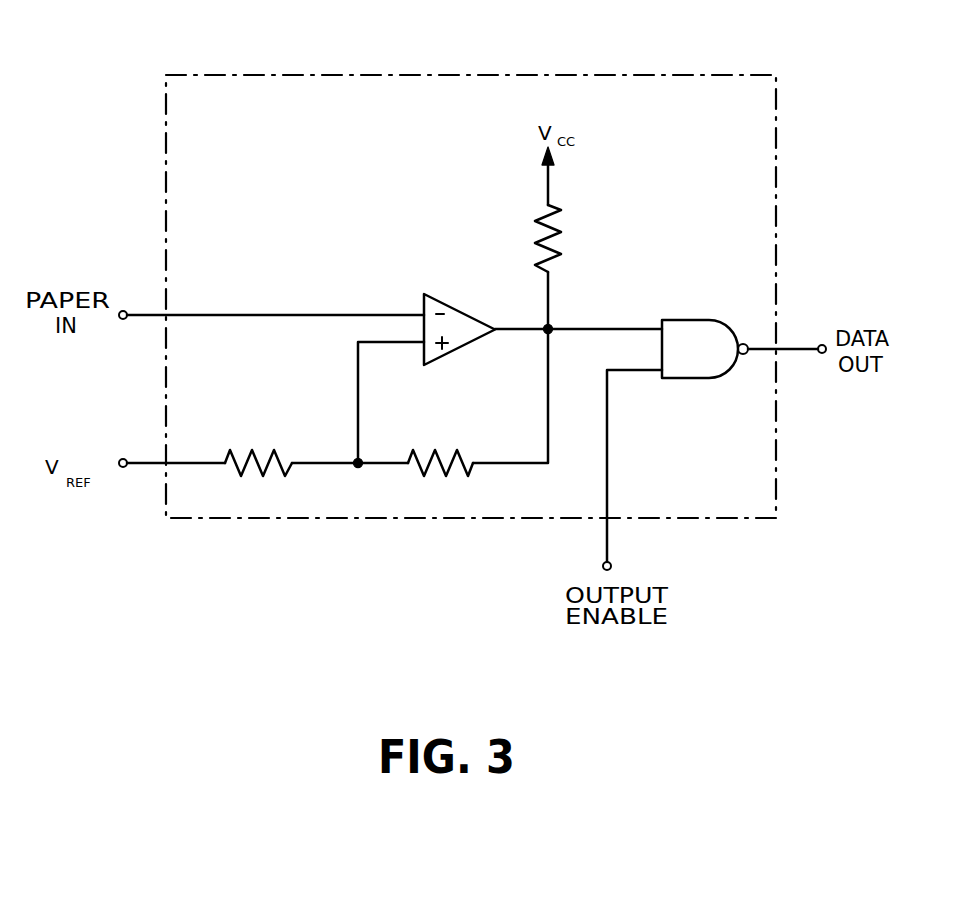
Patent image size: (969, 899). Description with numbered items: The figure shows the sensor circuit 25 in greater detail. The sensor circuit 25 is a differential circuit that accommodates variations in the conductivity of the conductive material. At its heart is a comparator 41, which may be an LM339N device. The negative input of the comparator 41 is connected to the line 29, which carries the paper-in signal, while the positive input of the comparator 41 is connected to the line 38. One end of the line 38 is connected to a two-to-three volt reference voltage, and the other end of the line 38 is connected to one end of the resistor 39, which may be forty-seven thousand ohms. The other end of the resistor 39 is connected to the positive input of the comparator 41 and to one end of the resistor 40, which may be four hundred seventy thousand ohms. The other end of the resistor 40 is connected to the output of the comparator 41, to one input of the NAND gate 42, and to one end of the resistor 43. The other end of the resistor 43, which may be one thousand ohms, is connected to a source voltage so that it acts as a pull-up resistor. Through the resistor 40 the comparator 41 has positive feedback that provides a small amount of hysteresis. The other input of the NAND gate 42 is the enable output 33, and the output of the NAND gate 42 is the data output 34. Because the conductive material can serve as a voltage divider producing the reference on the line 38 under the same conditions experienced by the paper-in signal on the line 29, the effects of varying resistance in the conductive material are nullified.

The sensor circuit 25 is at (332, 74).
The line 29 is at (200, 315).
The enable output 33 is at (607, 430).
The data output 34 is at (762, 352).
The line 38 is at (183, 465).
The resistor 39 is at (230, 450).
The resistor 40 is at (418, 447).
The comparator 41 is at (466, 308).
The NAND gate 42 is at (700, 320).
The resistor 43 is at (563, 237).